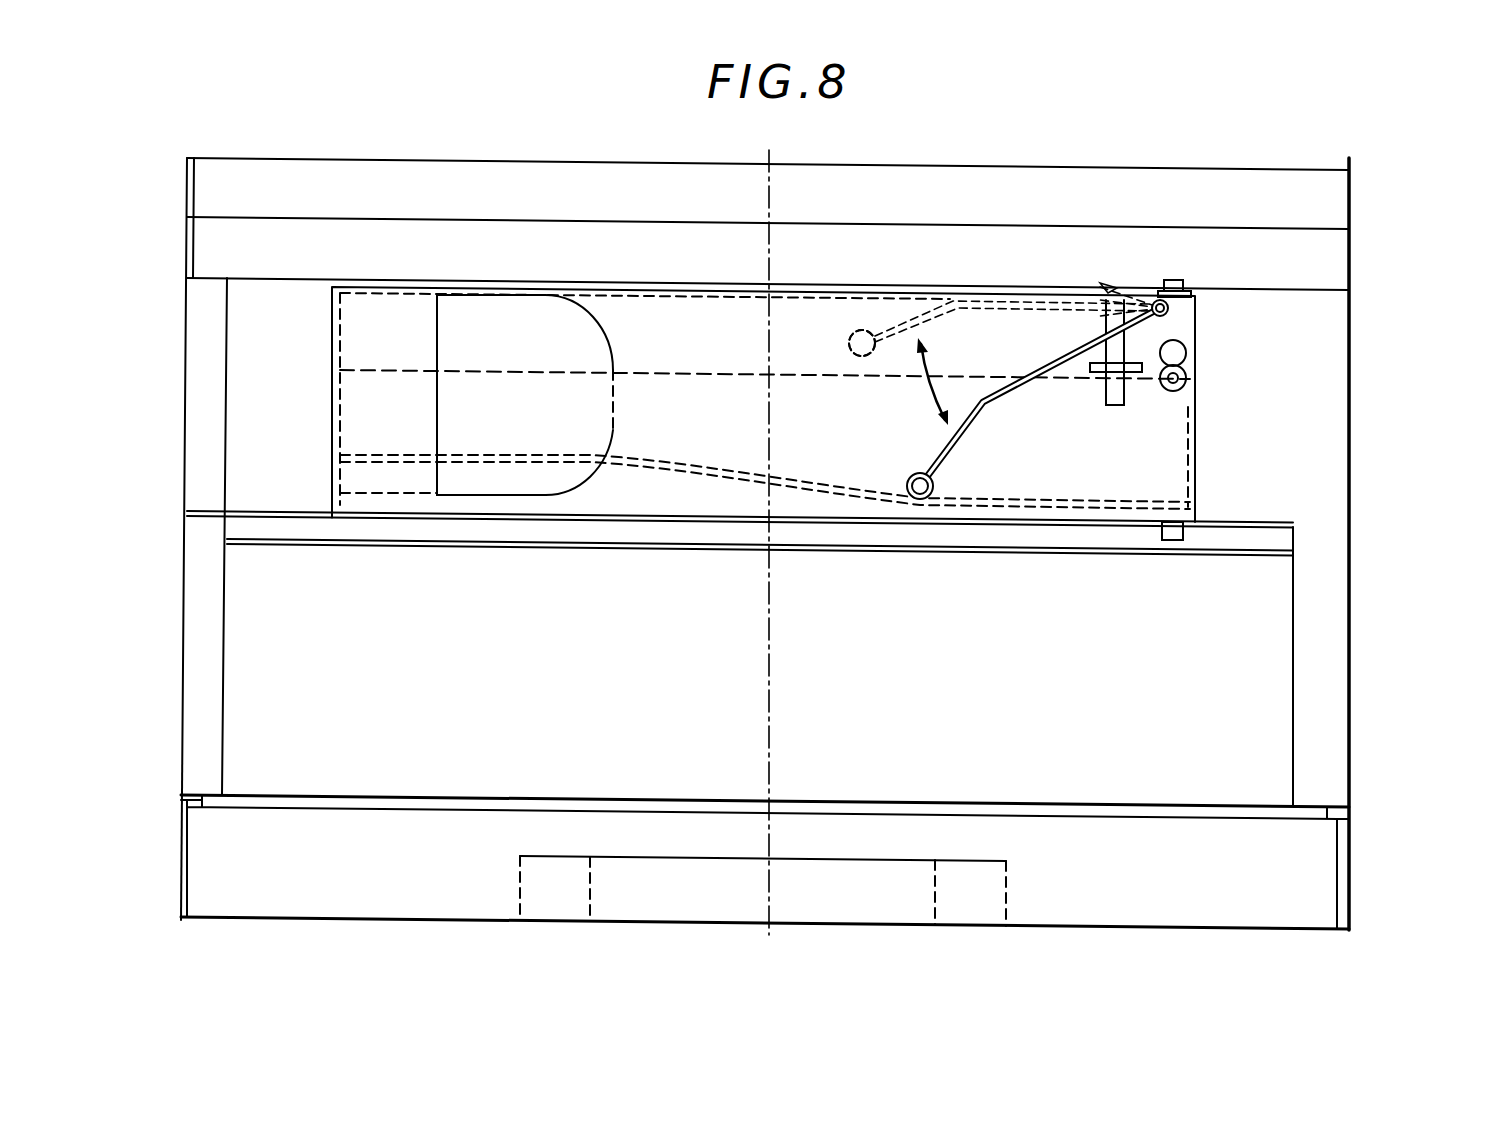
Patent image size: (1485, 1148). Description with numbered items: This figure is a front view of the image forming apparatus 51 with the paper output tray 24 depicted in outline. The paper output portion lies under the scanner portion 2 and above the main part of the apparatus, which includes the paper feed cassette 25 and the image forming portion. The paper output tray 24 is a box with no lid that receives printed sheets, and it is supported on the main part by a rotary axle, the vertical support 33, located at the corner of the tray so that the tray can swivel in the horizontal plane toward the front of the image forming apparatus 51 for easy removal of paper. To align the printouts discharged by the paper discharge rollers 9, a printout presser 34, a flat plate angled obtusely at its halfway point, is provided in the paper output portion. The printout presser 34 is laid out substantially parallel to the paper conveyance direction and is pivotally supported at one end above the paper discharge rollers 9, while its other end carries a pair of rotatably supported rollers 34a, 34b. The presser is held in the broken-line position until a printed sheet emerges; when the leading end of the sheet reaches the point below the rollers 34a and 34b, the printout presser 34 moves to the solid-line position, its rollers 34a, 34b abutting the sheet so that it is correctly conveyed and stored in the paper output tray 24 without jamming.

The scanner portion 2 is at (1335, 212).
The paper discharge rollers 9 is at (1187, 350).
The paper output tray 24 is at (1140, 500).
The paper feed cassette 25 is at (997, 885).
The vertical support 33 is at (1183, 282).
The printout presser 34 is at (947, 310).
The roller 34a is at (863, 358).
The roller 34b is at (862, 343).
The image forming apparatus 51 is at (1350, 673).